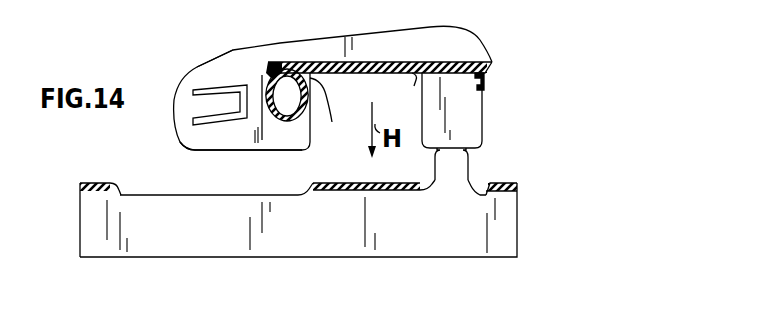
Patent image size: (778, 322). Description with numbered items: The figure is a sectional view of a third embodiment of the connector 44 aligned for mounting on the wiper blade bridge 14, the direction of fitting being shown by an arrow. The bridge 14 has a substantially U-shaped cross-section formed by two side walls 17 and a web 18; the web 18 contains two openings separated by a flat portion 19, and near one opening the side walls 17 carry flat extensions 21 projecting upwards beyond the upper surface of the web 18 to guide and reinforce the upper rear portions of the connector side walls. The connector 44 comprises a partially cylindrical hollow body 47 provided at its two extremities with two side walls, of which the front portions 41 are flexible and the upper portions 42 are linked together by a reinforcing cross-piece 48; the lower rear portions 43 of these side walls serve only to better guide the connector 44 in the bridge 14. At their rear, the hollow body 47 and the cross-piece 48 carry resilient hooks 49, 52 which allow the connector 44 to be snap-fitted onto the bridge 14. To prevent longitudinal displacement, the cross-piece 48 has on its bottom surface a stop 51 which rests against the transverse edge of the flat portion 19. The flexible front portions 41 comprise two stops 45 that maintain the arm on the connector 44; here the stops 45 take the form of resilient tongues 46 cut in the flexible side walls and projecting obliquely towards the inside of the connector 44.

The wiper blade bridge 14 is at (247, 257).
The side walls 17 is at (92, 228).
The web 18 is at (90, 183).
The flat portion 19 is at (340, 184).
The flat extensions 21 is at (455, 163).
The front portions of the side walls 41 is at (213, 72).
The upper portions of the side walls 42 is at (432, 38).
The lower rear portions of the side walls 43 is at (472, 113).
The connector 44 is at (485, 43).
The stops 45 is at (210, 108).
The resilient tongues 46 is at (185, 125).
The partially cylindrical body 47 is at (268, 70).
The reinforcing cross-piece 48 is at (330, 62).
The resilient hook 49 is at (328, 115).
The stop 51 is at (416, 79).
The resilient hook 52 is at (486, 88).